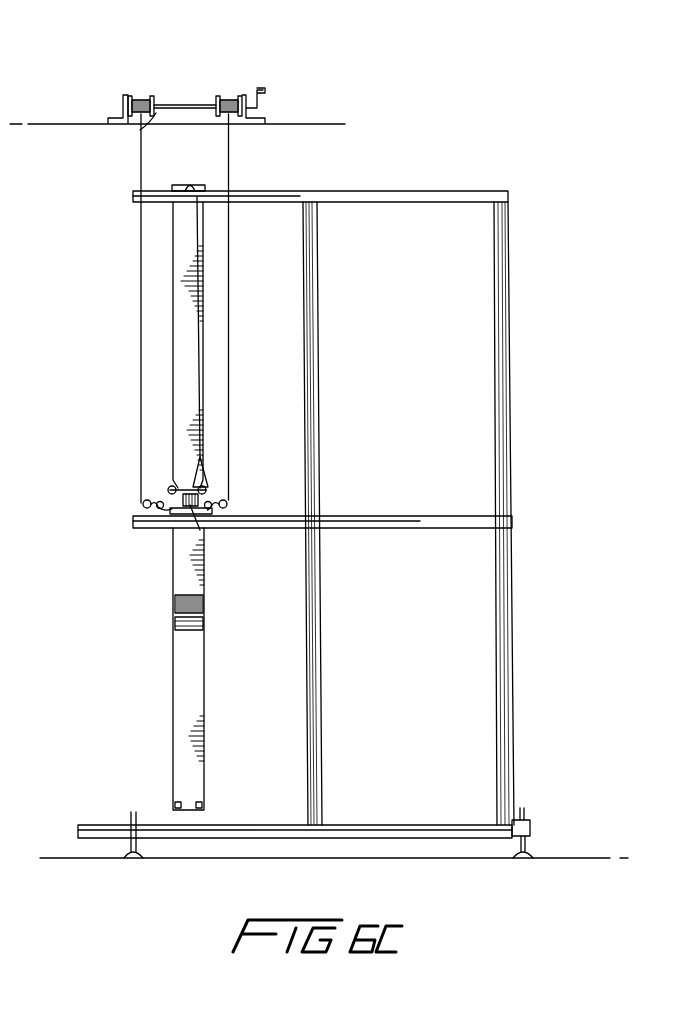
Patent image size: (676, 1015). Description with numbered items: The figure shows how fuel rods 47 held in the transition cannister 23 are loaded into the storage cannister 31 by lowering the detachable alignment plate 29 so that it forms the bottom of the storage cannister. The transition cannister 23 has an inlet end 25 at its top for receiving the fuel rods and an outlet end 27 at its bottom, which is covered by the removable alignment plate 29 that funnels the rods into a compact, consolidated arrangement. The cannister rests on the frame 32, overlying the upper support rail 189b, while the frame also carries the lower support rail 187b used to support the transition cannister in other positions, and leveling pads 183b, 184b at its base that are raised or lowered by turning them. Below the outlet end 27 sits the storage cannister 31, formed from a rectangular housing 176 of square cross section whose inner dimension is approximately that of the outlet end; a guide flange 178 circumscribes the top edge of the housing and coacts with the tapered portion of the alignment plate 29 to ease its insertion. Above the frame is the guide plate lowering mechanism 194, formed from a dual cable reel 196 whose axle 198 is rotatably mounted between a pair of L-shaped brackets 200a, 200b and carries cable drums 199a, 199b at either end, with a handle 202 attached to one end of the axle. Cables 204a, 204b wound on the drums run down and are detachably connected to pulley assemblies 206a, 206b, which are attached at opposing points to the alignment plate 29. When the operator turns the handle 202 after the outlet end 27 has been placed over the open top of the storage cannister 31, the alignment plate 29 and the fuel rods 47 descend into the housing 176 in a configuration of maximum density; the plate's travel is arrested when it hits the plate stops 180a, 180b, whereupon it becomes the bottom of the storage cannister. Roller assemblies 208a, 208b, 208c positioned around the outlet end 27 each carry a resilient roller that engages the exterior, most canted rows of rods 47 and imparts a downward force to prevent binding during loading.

The transition cannister 23 is at (180, 327).
The inlet end 25 is at (205, 190).
The outlet end 27 is at (183, 492).
The alignment plate 29 is at (203, 622).
The storage cannister 31 is at (188, 669).
The frame 32 is at (310, 493).
The fuel rods 47 is at (176, 603).
The rectangular housing 176 is at (195, 692).
The guide flange 178 is at (200, 530).
The plate stop 180a is at (176, 804).
The plate stop 180b is at (201, 804).
The leveling pad 183b is at (138, 858).
The leveling pad 184b is at (525, 858).
The lower support rail 187b is at (416, 516).
The upper support rail 189b is at (380, 196).
The guide plate lowering mechanism 194 is at (195, 90).
The dual cable reel 196 is at (195, 96).
The axle 198 is at (163, 107).
The cable drum 199a is at (148, 98).
The cable drum 199b is at (230, 98).
The L-shaped bracket 200a is at (122, 118).
The L-shaped bracket 200b is at (262, 110).
The handle 202 is at (263, 96).
The cable 204a is at (141, 160).
The cable 204b is at (229, 148).
The pulley assembly 206a is at (152, 507).
The pulley assembly 206b is at (226, 502).
The roller assembly 208a is at (168, 490).
The roller assembly 208b is at (208, 489).
The roller assembly 208c is at (206, 463).